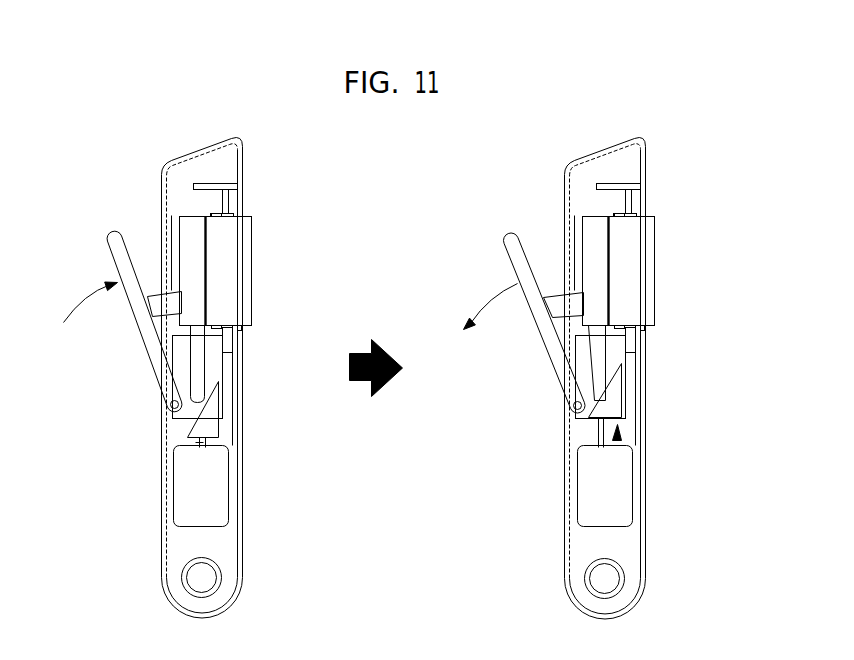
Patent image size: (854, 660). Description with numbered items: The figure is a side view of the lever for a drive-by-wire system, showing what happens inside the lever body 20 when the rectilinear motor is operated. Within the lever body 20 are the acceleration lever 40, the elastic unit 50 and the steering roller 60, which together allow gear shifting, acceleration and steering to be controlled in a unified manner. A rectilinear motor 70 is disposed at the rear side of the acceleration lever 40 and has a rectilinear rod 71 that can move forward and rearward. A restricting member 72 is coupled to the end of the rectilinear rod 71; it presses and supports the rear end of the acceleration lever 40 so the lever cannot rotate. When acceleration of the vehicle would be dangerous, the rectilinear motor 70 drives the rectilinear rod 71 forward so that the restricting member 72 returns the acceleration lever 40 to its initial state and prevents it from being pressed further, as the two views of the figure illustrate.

The lever body 20 is at (242, 162).
The acceleration lever 40 is at (148, 332).
The elastic unit 50 is at (188, 232).
The steering roller 60 is at (232, 258).
The rectilinear motor 70 is at (208, 478).
The rectilinear rod 71 is at (187, 437).
The restricting member 72 is at (210, 410).